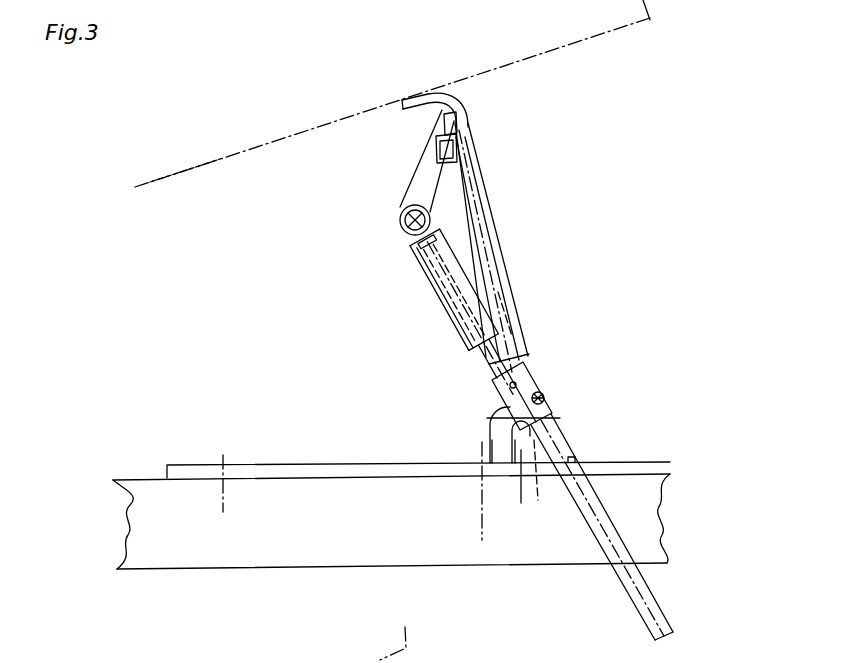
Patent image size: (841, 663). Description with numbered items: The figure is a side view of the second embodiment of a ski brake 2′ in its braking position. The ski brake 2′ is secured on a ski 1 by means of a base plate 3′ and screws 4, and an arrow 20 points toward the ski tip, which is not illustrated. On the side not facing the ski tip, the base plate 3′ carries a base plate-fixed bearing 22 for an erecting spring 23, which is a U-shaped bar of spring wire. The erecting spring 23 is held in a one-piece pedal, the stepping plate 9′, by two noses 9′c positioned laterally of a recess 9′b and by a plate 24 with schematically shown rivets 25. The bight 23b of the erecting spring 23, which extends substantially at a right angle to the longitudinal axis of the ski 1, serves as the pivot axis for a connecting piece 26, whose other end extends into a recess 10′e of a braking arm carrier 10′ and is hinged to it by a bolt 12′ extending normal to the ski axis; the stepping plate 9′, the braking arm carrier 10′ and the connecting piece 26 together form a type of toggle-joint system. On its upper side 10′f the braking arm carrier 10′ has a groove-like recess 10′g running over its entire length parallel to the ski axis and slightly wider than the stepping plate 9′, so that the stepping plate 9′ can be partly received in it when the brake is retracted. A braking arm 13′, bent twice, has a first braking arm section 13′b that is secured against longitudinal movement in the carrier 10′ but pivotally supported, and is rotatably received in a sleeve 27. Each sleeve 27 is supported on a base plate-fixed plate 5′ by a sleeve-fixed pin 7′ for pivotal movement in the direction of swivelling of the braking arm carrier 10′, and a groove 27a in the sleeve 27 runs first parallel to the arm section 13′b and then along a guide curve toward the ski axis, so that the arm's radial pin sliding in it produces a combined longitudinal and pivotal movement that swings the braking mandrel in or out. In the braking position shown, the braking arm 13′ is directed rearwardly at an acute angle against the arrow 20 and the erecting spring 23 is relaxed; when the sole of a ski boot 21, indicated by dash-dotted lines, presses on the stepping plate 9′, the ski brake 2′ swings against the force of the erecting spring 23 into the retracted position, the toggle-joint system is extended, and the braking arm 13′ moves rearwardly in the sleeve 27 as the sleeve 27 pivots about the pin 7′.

The ski 1 is at (182, 552).
The ski brake 2′ is at (465, 60).
The base plate 3′ is at (313, 466).
The screws 4 is at (223, 512).
The base plate-fixed plate 5′ is at (521, 503).
The sleeve-fixed pin 7′ is at (538, 500).
The stepping plate 9′ is at (528, 344).
The recess 9′b is at (470, 144).
The noses 9′c is at (440, 155).
The braking arm carrier 10′ is at (424, 272).
The recess 10′e is at (420, 238).
The upper side 10′f is at (452, 252).
The groove-like recess 10′g is at (517, 312).
The bolt 12′ is at (400, 223).
The braking arm 13′ is at (598, 505).
The braking arm section 13′b is at (497, 310).
The arrow 20 is at (150, 428).
The sole of a ski boot 21 is at (170, 163).
The base plate-fixed bearing 22 is at (498, 453).
The erecting spring 23 is at (477, 200).
The bight 23b is at (466, 117).
The plate 24 is at (493, 218).
The rivets 25 is at (509, 278).
The connecting piece 26 is at (419, 163).
The sleeve 27 is at (543, 396).
The groove 27a is at (537, 410).